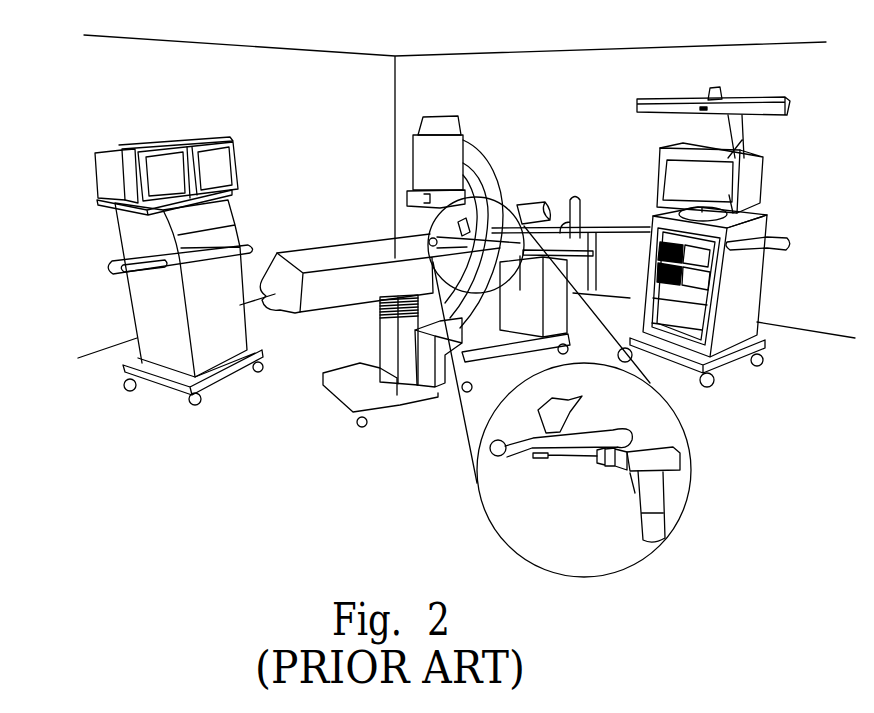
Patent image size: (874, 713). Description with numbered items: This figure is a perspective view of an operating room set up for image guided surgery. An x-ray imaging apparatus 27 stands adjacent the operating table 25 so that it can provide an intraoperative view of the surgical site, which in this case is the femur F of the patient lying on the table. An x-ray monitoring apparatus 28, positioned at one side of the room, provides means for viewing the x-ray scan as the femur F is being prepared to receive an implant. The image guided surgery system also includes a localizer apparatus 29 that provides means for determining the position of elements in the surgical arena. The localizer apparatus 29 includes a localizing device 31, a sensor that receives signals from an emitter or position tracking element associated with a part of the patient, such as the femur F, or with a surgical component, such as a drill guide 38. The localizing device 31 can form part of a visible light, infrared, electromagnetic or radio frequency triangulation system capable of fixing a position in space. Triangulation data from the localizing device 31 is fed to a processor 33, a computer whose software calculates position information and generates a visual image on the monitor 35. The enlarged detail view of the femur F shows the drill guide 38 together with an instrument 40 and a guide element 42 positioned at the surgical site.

The operating table 25 is at (360, 253).
The x-ray imaging apparatus 27 is at (527, 188).
The x-ray monitoring apparatus 28 is at (123, 308).
The localizer apparatus 29 is at (648, 210).
The localizing device 31 is at (778, 100).
The processor 33 is at (715, 287).
The monitor 35 is at (660, 163).
The drill guide 38 is at (535, 462).
The surgical drill 40 is at (650, 523).
The targeting guide 42 is at (572, 403).
The femur F is at (590, 435).